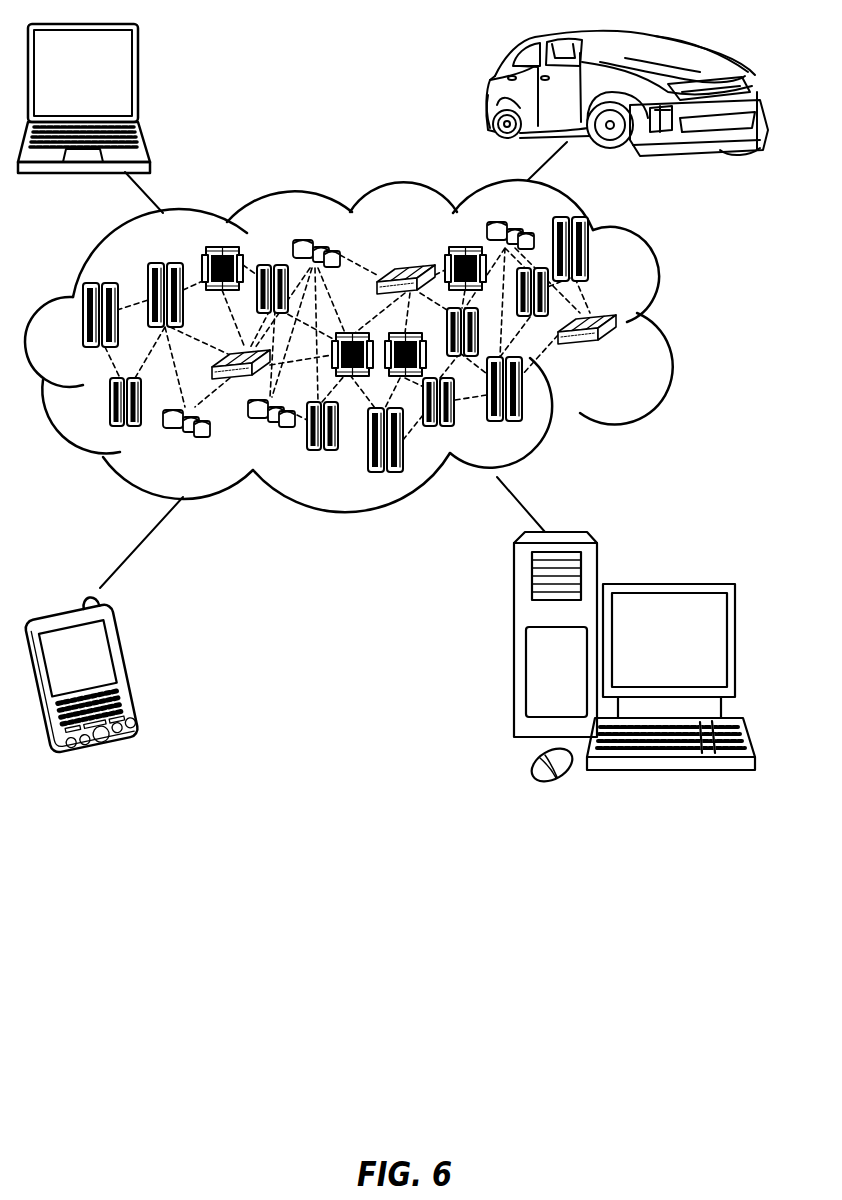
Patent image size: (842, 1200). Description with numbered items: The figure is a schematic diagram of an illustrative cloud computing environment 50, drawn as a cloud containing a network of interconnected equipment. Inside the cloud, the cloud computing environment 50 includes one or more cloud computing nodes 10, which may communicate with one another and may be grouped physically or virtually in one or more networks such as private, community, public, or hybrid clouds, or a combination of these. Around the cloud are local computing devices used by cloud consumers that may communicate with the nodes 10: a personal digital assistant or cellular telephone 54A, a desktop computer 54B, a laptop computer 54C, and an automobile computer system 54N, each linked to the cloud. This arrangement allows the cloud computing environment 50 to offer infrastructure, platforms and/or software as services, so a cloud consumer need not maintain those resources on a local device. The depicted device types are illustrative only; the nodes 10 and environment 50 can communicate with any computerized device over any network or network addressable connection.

The cloud computing node 10 is at (623, 356).
The cloud computing environment 50 is at (670, 326).
The personal digital assistant or cellular telephone 54A is at (130, 668).
The desktop computer 54B is at (667, 583).
The laptop computer 54C is at (139, 77).
The automobile computer system 54N is at (491, 90).